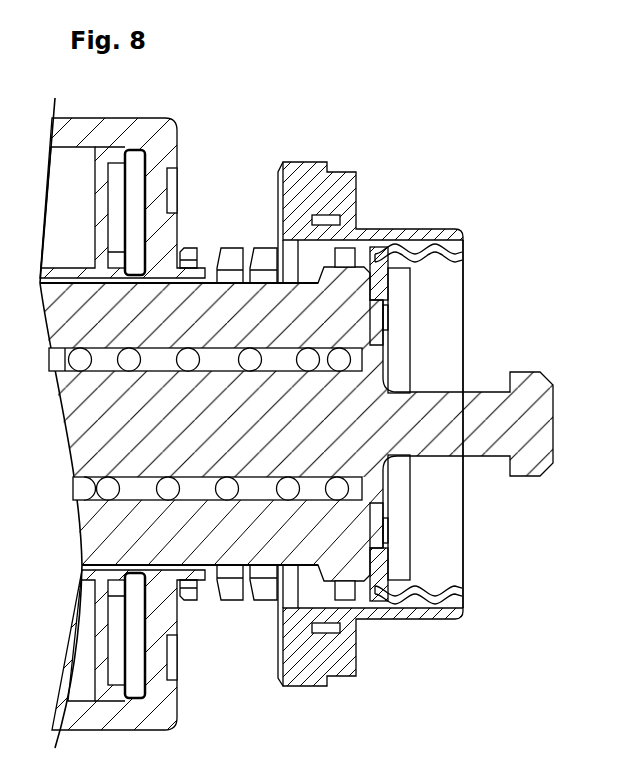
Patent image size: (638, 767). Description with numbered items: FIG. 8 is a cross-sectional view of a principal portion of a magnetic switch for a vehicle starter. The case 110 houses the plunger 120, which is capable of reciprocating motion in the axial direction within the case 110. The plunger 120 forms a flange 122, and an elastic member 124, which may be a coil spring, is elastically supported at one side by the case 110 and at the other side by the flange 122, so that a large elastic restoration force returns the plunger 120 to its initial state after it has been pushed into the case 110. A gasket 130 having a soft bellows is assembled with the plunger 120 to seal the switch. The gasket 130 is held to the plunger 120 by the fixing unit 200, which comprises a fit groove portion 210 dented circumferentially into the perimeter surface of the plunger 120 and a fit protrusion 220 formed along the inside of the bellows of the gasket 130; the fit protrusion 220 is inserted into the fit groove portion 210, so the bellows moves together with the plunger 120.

The case 110 is at (142, 137).
The plunger 120 is at (316, 310).
The flange 122 is at (370, 250).
The elastic member 124 is at (233, 247).
The gasket 130 is at (365, 198).
The fixing unit 200 is at (529, 547).
The fit groove portion 210 is at (384, 562).
The fit protrusion 220 is at (384, 578).